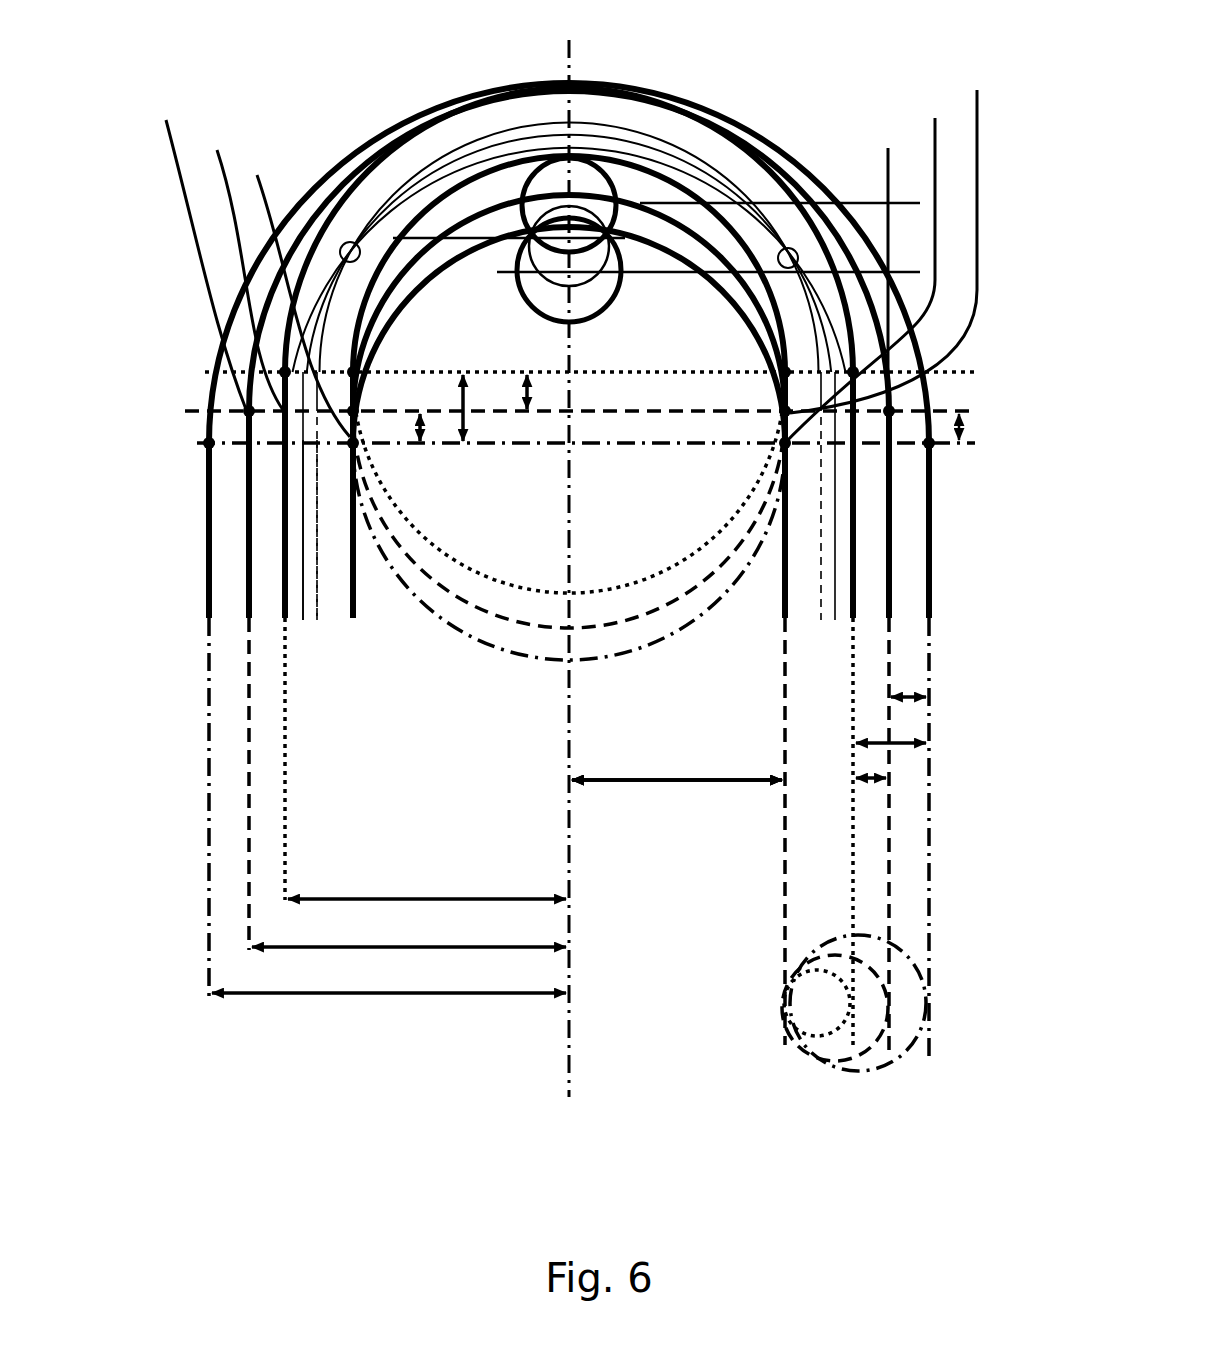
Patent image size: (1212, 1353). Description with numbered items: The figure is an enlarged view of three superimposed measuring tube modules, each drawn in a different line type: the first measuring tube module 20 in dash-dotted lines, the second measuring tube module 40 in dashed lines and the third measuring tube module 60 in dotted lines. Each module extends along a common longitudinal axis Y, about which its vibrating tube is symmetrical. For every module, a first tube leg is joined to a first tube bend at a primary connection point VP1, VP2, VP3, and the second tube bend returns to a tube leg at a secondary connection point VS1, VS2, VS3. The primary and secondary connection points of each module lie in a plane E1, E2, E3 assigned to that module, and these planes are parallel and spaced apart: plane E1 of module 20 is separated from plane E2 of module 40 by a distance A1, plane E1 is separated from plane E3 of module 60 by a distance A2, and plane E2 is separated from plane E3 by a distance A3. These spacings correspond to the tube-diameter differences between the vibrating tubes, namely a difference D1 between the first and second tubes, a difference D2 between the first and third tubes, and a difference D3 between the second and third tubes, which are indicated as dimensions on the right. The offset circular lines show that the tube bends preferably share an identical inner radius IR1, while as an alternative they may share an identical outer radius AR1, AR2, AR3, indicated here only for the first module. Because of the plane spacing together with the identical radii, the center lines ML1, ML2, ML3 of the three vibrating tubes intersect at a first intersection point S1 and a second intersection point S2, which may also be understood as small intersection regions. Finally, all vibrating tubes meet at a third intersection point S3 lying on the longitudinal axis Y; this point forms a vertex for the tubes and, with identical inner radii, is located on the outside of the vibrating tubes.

The first intersection point S1 is at (346, 241).
The second intersection point S2 is at (791, 247).
The third intersection point S3 is at (578, 82).
The primary connection point VP1 is at (194, 251).
The primary connection point VP2 is at (237, 265).
The primary connection point VP3 is at (294, 292).
The secondary connection point VS1 is at (892, 234).
The secondary connection point VS2 is at (863, 264).
The secondary connection point VS3 is at (880, 262).
The plane E1 is at (198, 441).
The plane E2 is at (203, 409).
The plane E3 is at (207, 370).
The center line ML1 is at (283, 492).
The center line ML2 is at (302, 537).
The center line ML3 is at (316, 560).
The distance A1 is at (418, 445).
The distance A2 is at (462, 420).
The distance A3 is at (526, 400).
The outer radius AR1 is at (307, 993).
The outer radius AR2 is at (417, 947).
The outer radius AR3 is at (500, 899).
The inner radius IR1 is at (750, 782).
The difference D1 is at (905, 700).
The difference D2 is at (908, 746).
The difference D3 is at (872, 782).
The longitudinal axis Y is at (566, 1052).
The first measuring tube module 20 is at (927, 1042).
The second measuring tube module 40 is at (882, 1042).
The third measuring tube module 60 is at (848, 1040).